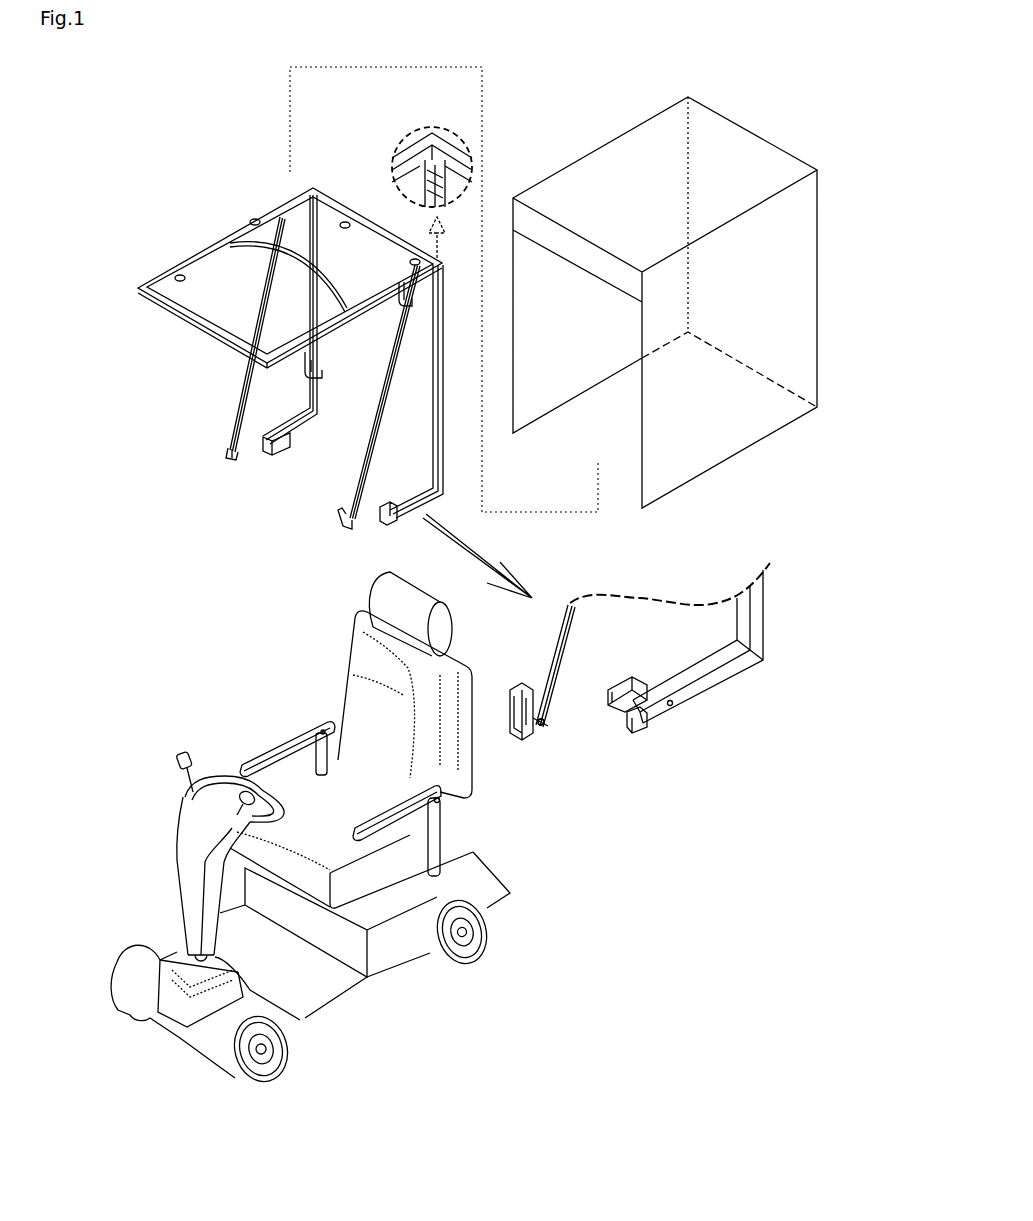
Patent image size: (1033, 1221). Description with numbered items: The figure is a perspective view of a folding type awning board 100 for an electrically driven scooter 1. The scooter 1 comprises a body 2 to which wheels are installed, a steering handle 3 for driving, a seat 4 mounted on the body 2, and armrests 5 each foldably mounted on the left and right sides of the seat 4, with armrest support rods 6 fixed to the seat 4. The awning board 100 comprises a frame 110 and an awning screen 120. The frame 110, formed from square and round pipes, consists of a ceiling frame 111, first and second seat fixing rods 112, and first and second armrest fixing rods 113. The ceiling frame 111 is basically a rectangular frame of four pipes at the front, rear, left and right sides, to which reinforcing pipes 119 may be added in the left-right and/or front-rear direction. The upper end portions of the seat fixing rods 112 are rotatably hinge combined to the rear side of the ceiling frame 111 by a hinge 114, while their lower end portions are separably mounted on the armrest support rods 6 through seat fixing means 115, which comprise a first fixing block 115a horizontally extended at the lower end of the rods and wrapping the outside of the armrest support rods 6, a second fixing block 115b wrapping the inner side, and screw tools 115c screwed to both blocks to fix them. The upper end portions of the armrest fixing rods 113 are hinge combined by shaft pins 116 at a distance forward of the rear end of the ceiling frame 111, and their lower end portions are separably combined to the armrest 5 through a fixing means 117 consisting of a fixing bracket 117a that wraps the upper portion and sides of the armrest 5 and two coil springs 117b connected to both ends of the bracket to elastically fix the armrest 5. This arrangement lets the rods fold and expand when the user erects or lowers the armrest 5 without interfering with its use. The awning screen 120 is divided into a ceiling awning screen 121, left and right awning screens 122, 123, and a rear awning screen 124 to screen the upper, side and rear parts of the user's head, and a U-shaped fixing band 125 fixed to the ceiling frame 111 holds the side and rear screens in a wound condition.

The electrically driven scooter 1 is at (253, 727).
The body 2 is at (303, 992).
The steering handle 3 is at (190, 810).
The seat 4 is at (358, 655).
The armrest 5 is at (363, 720).
The armrest support rod 6 is at (437, 802).
The folding type awning board 100 is at (549, 137).
The frame 110 is at (205, 218).
The ceiling frame 111 is at (200, 250).
The first and second seat fixing rods 112 is at (420, 180).
The first and second armrest fixing rods 113 is at (381, 380).
The hinge 114 is at (442, 135).
The seat fixing means 115 is at (765, 767).
The first fixing block 115a is at (672, 708).
The second fixing block 115b is at (608, 710).
The screw tools 115c is at (640, 713).
The shaft pins 116 is at (408, 262).
The fixing means 117 is at (578, 770).
The fixing bracket 117a is at (493, 713).
The coil springs 117b is at (527, 735).
The reinforcing pipes 119 is at (258, 217).
The awning screen 120 is at (757, 120).
The ceiling awning screen 121 is at (608, 160).
The left awning screen 122 is at (552, 388).
The right awning screen 123 is at (685, 463).
The rear awning screen 124 is at (750, 342).
The fixing band 125 is at (307, 363).